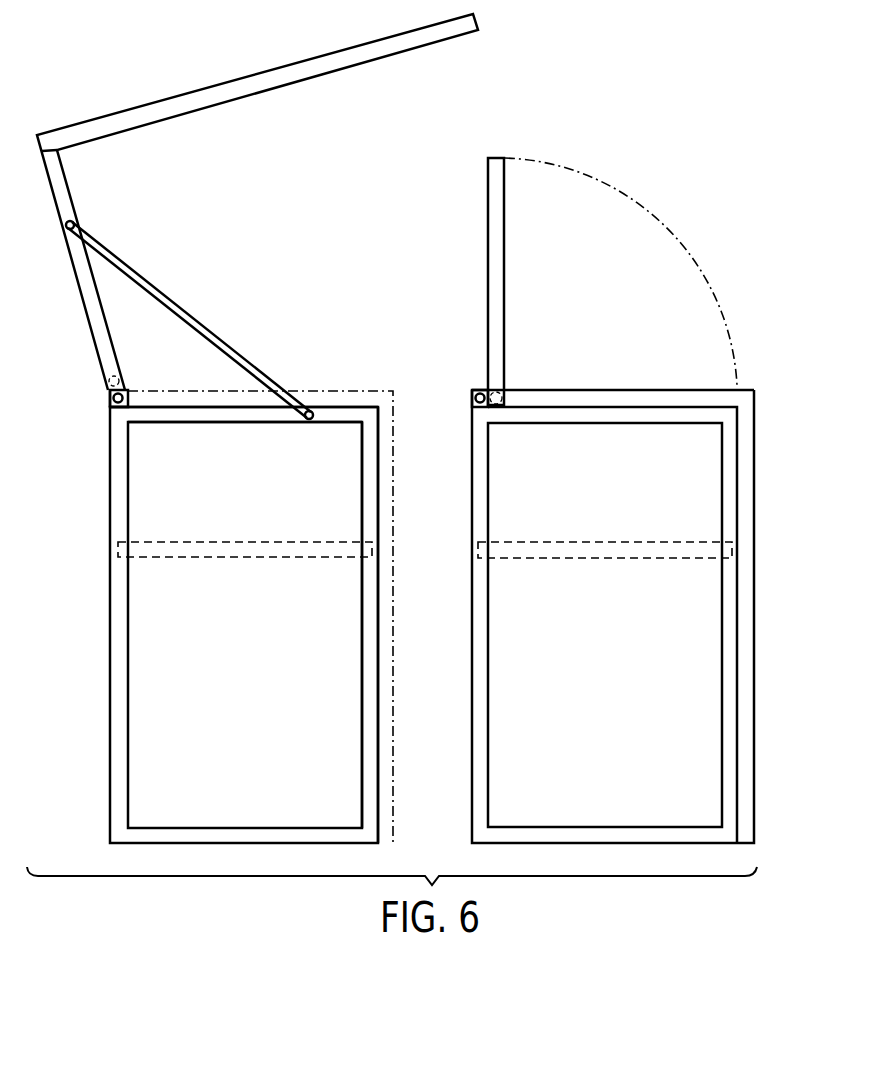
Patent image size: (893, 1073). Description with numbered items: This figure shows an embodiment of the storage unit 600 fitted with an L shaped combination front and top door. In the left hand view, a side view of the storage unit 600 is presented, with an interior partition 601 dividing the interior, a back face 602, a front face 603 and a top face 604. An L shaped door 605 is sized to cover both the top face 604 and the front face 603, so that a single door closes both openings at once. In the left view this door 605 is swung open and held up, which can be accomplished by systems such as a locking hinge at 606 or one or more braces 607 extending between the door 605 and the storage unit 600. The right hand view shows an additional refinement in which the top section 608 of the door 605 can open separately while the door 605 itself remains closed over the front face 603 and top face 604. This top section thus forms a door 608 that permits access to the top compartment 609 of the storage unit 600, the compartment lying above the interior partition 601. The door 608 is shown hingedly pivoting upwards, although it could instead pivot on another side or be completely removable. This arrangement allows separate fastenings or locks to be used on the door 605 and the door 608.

The storage unit 600 is at (416, 428).
The interior partition 601 is at (244, 560).
The back face 602 is at (110, 500).
The front face 603 is at (368, 726).
The top face 604 is at (190, 406).
The L shaped door 605 is at (268, 90).
The locking hinge 606 is at (110, 393).
The brace 607 is at (193, 317).
The top section 608 is at (495, 277).
The top compartment 609 is at (700, 475).